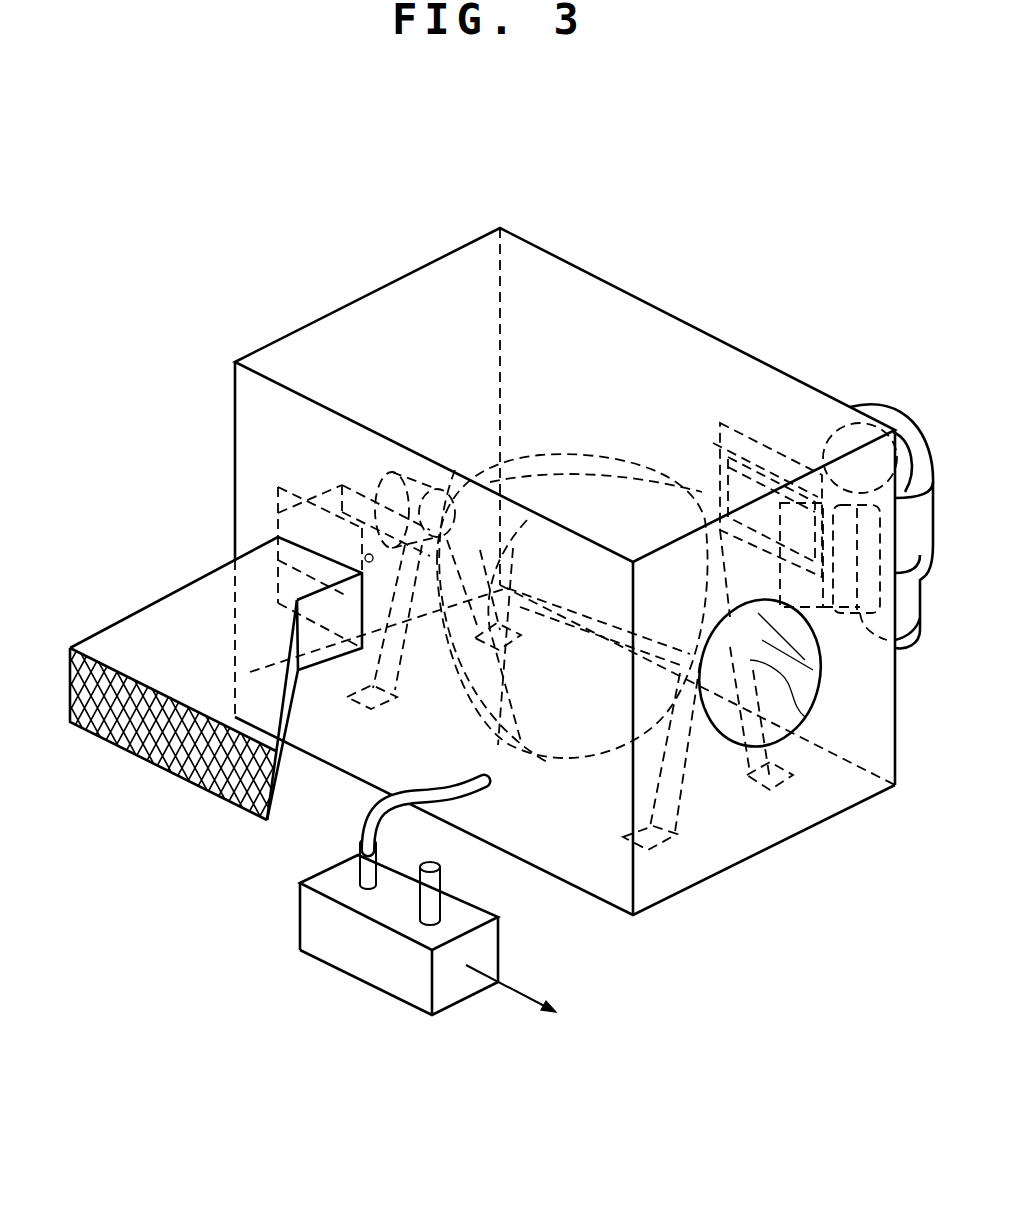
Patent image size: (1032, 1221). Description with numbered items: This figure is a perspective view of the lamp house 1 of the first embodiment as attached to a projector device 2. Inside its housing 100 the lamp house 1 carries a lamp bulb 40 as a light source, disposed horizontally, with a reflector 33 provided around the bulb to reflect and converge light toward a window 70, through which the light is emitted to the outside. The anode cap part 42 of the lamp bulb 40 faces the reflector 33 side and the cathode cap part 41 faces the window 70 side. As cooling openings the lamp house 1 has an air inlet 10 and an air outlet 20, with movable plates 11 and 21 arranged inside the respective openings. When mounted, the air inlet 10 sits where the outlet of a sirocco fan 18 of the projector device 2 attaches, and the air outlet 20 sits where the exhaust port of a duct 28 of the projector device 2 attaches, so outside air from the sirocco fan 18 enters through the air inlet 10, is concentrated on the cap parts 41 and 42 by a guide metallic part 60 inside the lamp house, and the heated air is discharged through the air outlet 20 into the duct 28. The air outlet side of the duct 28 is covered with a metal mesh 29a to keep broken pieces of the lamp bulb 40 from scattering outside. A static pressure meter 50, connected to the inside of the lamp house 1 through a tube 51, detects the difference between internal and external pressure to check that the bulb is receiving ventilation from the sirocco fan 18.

The lamp house 1 is at (660, 263).
The housing 100 is at (425, 264).
The projector device 2 is at (858, 424).
The air inlet 10 is at (720, 478).
The movable plate 11 is at (748, 432).
The sirocco fan 18 is at (875, 408).
The air outlet 20 is at (277, 523).
The movable plate 21 is at (276, 497).
The duct 28 is at (170, 597).
The metal mesh 29a is at (147, 745).
The reflector 33 is at (547, 762).
The lamp bulb 40 is at (560, 520).
The cathode cap part 41 is at (805, 717).
The anode cap part 42 is at (405, 483).
The static pressure meter 50 is at (312, 953).
The tube 51 is at (365, 797).
The guide metallic part 60 is at (898, 632).
The window 70 is at (770, 748).